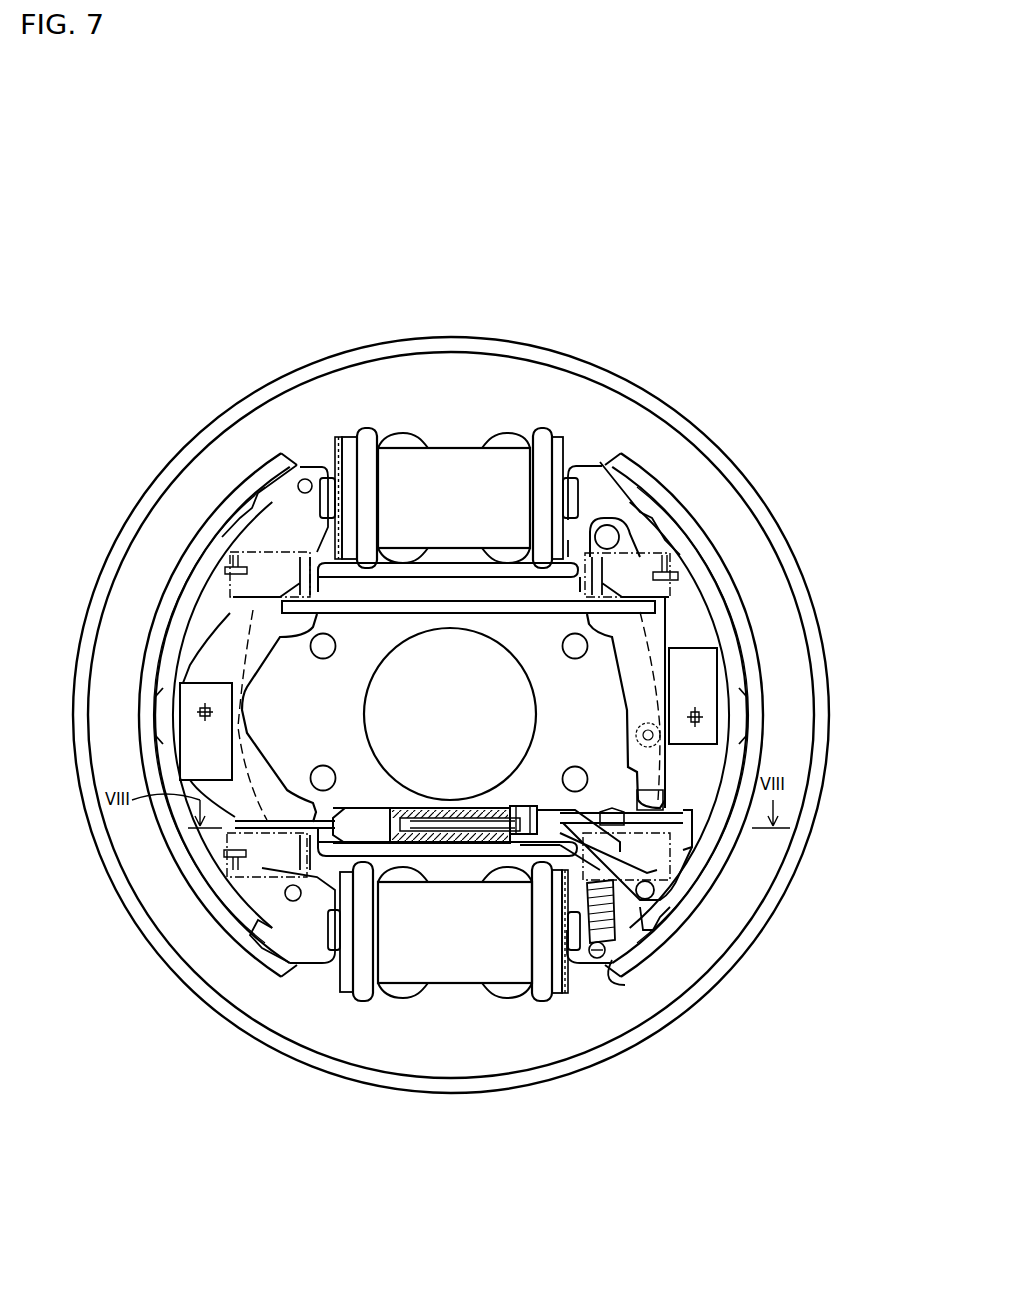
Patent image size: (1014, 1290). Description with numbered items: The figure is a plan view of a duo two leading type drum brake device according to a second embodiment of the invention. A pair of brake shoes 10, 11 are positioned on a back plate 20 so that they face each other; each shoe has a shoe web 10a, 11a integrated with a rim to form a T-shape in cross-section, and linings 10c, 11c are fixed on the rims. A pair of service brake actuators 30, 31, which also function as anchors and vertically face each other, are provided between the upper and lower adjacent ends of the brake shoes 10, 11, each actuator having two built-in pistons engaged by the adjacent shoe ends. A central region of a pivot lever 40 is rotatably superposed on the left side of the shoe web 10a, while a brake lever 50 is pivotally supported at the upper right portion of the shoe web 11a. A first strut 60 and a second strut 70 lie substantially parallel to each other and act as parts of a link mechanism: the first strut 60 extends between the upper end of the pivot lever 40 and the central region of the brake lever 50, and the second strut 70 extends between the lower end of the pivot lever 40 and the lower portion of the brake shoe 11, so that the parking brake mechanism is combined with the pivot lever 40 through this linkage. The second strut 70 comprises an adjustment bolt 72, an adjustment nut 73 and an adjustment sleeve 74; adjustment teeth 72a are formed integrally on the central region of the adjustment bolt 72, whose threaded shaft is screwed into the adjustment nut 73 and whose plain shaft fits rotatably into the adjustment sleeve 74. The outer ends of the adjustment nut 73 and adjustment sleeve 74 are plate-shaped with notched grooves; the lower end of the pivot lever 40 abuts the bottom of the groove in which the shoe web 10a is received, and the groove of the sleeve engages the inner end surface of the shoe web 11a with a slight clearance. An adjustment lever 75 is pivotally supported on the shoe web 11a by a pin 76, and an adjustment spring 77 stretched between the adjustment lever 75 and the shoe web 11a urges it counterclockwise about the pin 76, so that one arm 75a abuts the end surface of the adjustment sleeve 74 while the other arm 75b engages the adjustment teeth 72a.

The brake shoe 10 is at (218, 486).
The shoe web 10a is at (200, 590).
The lining 10c is at (175, 845).
The brake shoe 11 is at (726, 546).
The shoe web 11a is at (712, 625).
The lining 11c is at (748, 645).
The back plate 20 is at (706, 452).
The service brake actuator 30 is at (457, 436).
The service brake actuator 31 is at (442, 997).
The pivot lever 40 is at (200, 655).
The brake lever 50 is at (617, 677).
The first strut 60 is at (448, 614).
The second strut 70 is at (430, 789).
The adjustment bolt 72 is at (480, 806).
The adjustment teeth 72a is at (498, 868).
The adjustment nut 73 is at (366, 815).
The adjustment sleeve 74 is at (607, 822).
The adjustment lever 75 is at (668, 878).
The arm 75a is at (690, 828).
The arm 75b is at (512, 806).
The pin 76 is at (647, 892).
The adjustment spring 77 is at (633, 918).